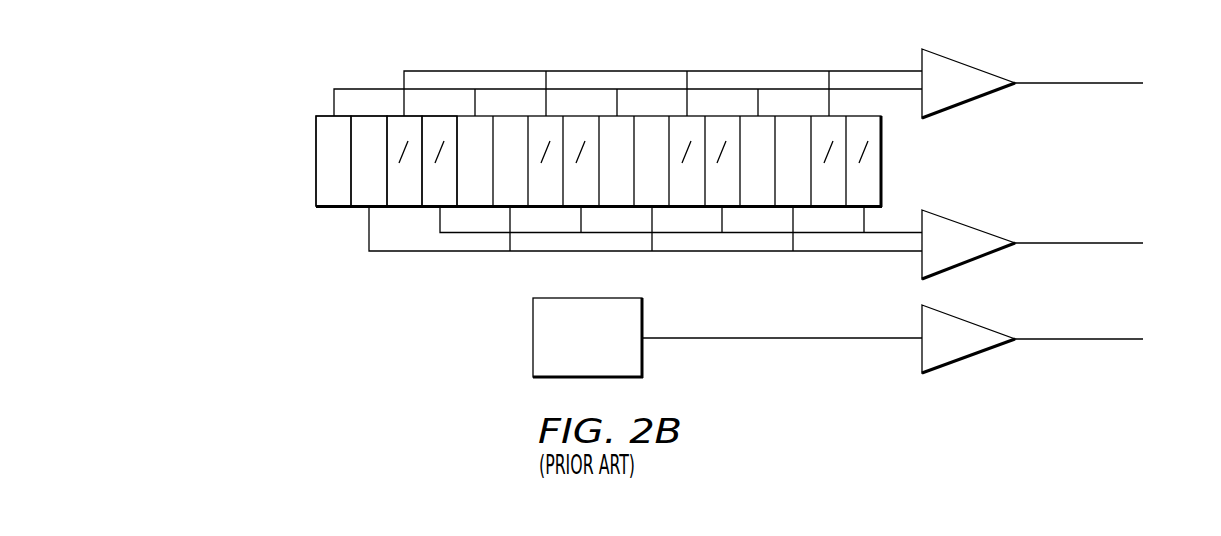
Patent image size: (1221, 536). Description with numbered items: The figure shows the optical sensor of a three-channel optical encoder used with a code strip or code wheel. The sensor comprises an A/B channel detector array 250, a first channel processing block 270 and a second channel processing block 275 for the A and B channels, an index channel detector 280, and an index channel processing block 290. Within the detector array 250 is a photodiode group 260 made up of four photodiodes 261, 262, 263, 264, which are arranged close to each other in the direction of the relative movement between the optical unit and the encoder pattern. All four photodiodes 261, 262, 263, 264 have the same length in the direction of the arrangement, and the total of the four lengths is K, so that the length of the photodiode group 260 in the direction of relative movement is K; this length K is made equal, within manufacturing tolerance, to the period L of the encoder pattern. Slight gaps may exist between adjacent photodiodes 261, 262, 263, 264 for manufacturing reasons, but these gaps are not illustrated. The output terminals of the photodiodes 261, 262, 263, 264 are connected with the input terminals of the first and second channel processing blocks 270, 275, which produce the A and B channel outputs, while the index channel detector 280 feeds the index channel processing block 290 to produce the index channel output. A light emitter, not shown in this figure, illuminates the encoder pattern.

The A/B channel detector array 250 is at (537, 212).
The photodiode group 260 is at (489, 48).
The photodiode 261 is at (332, 198).
The photodiode 262 is at (362, 198).
The photodiode 263 is at (403, 198).
The photodiode 264 is at (448, 198).
The first channel processing block 270 is at (957, 58).
The second channel processing block 275 is at (957, 222).
The index channel detector 280 is at (642, 317).
The index channel processing block 290 is at (957, 316).